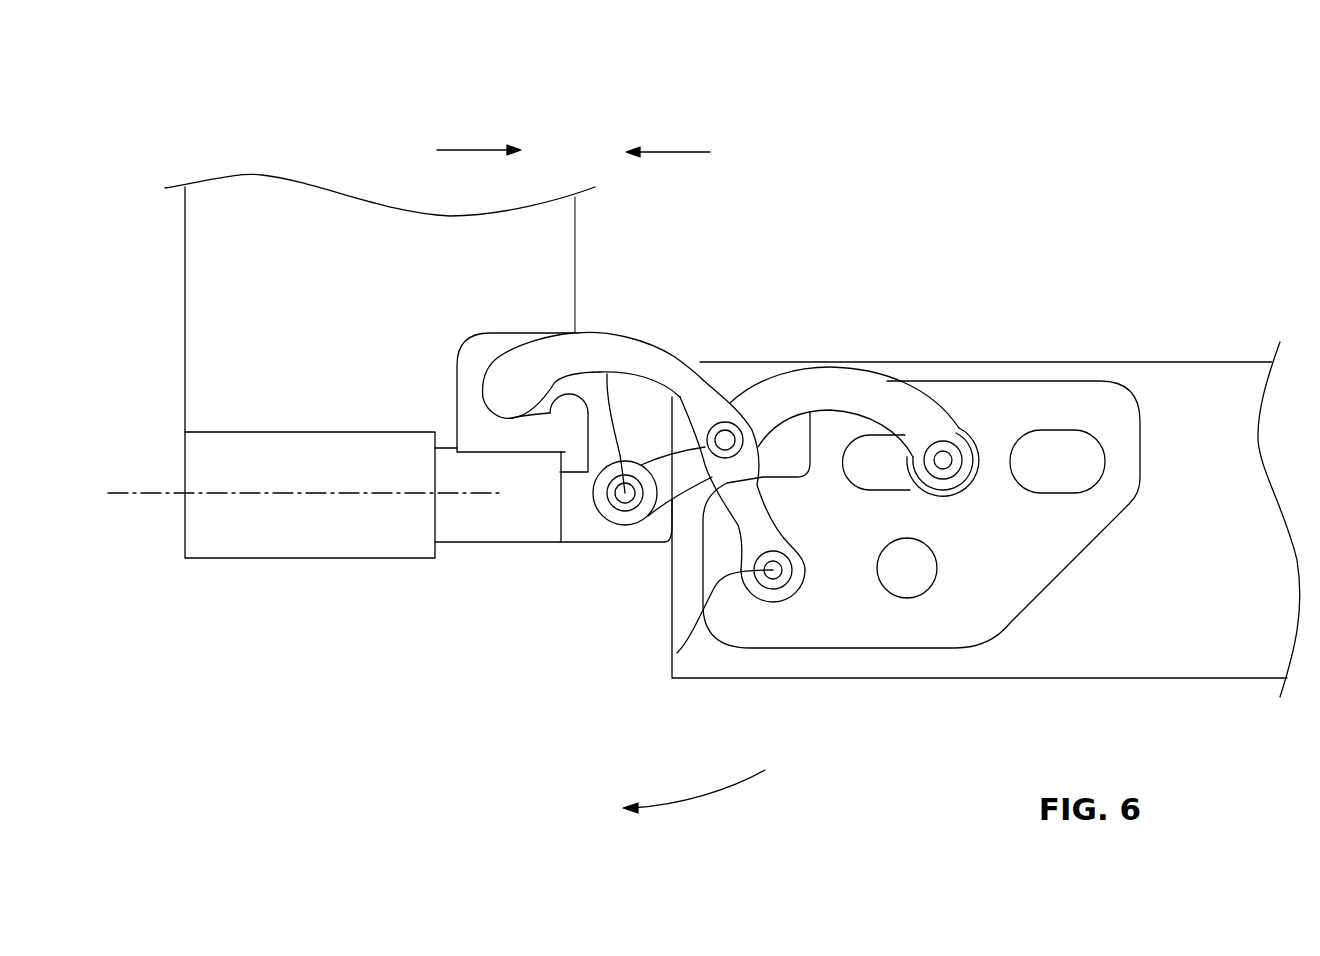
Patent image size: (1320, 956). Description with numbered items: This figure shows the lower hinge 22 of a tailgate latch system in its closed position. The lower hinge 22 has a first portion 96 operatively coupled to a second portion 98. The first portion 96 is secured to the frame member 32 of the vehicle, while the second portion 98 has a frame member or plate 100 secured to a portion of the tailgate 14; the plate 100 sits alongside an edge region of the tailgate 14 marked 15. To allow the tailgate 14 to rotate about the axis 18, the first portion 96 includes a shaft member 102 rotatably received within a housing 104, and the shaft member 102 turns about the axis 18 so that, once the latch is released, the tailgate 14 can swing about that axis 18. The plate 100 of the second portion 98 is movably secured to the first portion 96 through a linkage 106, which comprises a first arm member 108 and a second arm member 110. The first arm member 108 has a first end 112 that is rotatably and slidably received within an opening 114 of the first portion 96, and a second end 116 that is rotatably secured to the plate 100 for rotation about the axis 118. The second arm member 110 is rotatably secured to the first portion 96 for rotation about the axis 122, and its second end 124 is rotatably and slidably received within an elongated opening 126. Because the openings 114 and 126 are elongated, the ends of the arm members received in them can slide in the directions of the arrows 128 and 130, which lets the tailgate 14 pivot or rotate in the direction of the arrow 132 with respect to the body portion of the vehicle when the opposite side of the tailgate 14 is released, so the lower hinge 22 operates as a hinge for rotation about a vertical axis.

The tailgate 14 is at (1148, 380).
The plate edge break 15 is at (1235, 404).
The axis 18 is at (133, 497).
The lower hinge 22 is at (726, 431).
The frame member 32 is at (556, 243).
The first portion 96 is at (373, 547).
The second portion 98 is at (871, 588).
The frame member or plate 100 is at (774, 602).
The shaft member 102 is at (482, 523).
The housing 104 is at (357, 527).
The linkage 106 is at (735, 380).
The first arm member 108 is at (642, 362).
The second arm member 110 is at (830, 368).
The first end 112 is at (507, 387).
The opening 114 is at (650, 418).
The second end 116 is at (806, 572).
The axis 118 is at (677, 653).
The axis 122 is at (650, 418).
The second end 124 is at (940, 436).
The elongated opening 126 is at (870, 490).
The arrow 128 is at (468, 150).
The arrow 130 is at (682, 152).
The arrow 132 is at (695, 807).